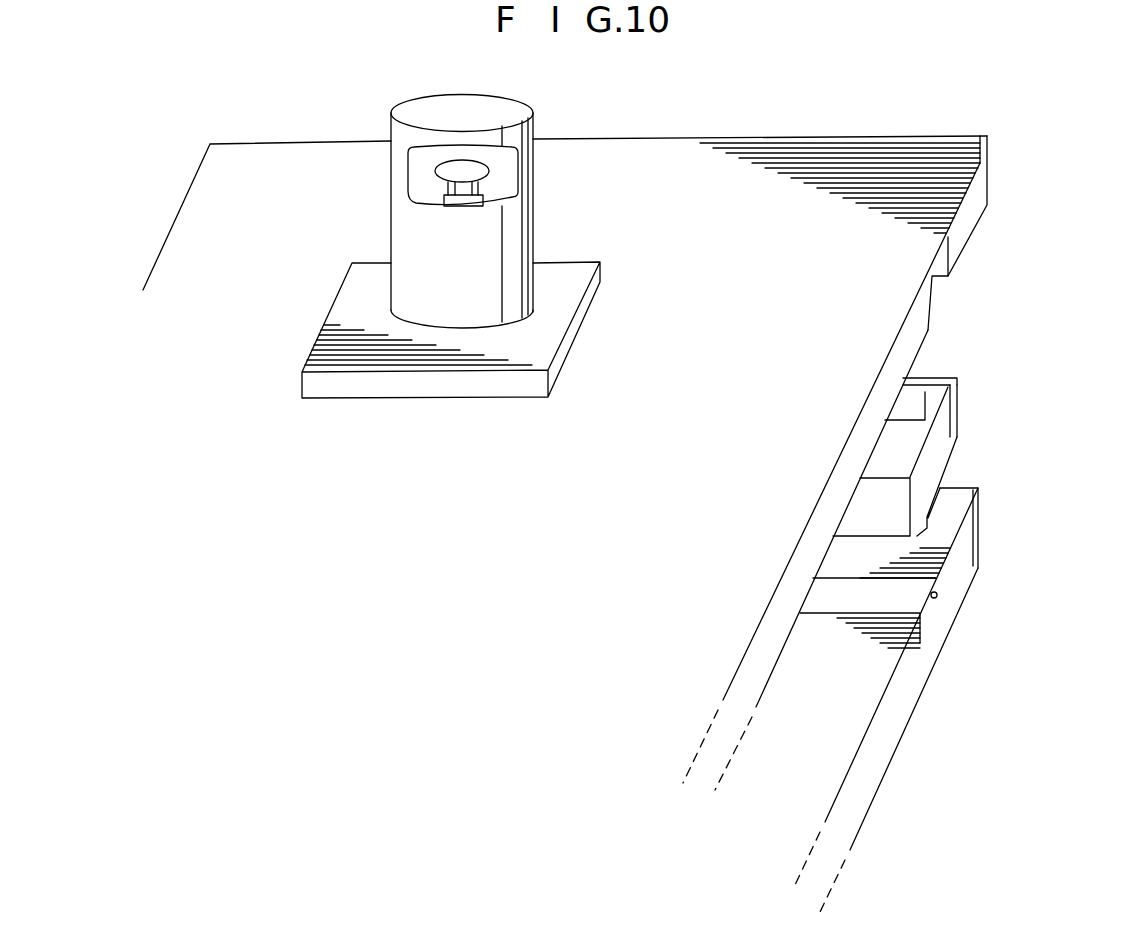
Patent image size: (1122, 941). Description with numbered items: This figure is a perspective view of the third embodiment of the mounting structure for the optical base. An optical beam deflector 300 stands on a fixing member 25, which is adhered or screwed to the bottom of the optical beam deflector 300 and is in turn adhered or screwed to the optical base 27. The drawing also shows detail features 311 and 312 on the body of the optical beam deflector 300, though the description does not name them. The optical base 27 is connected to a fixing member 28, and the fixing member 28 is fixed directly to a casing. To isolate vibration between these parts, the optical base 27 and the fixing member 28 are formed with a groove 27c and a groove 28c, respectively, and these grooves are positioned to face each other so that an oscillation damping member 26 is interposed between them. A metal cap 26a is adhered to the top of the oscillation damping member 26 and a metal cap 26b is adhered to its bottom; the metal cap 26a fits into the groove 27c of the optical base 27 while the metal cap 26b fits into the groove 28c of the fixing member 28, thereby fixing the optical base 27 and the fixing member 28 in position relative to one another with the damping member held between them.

The optical beam deflector 300 is at (469, 208).
The window opening 311 is at (410, 195).
The knob 312 is at (482, 171).
The fixing member 25 is at (577, 325).
The optical base 27 is at (988, 160).
The groove 27c is at (945, 278).
The oscillation damping member 26 is at (947, 427).
The metal cap 26a is at (942, 400).
The metal cap 26b is at (938, 492).
The fixing member 28 is at (966, 558).
The groove 28c is at (936, 598).